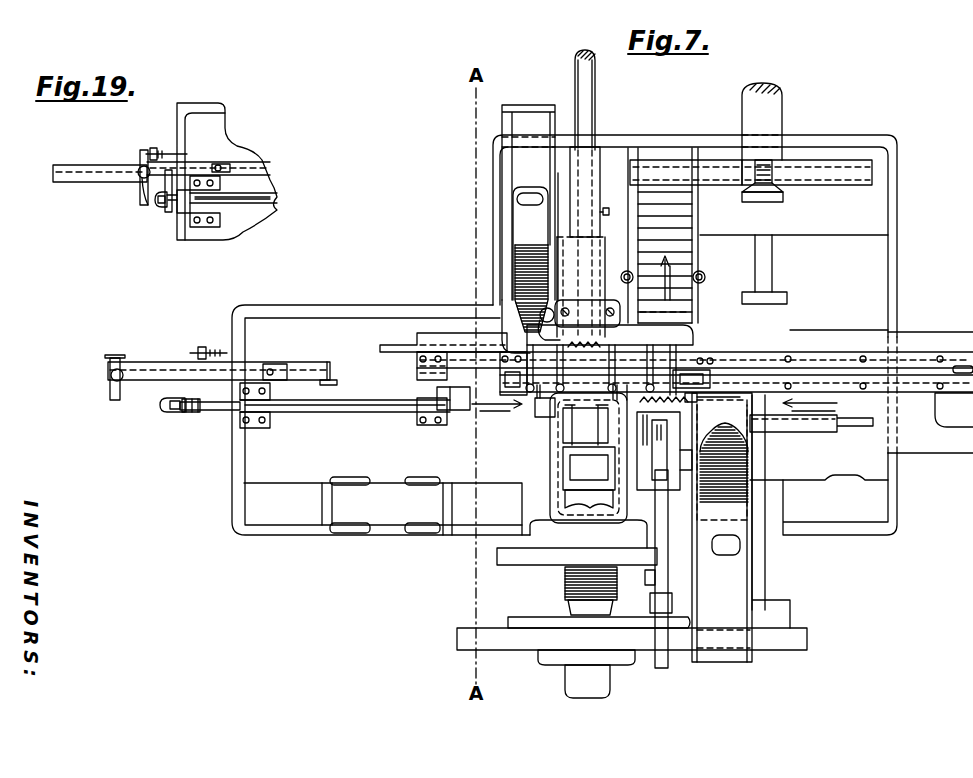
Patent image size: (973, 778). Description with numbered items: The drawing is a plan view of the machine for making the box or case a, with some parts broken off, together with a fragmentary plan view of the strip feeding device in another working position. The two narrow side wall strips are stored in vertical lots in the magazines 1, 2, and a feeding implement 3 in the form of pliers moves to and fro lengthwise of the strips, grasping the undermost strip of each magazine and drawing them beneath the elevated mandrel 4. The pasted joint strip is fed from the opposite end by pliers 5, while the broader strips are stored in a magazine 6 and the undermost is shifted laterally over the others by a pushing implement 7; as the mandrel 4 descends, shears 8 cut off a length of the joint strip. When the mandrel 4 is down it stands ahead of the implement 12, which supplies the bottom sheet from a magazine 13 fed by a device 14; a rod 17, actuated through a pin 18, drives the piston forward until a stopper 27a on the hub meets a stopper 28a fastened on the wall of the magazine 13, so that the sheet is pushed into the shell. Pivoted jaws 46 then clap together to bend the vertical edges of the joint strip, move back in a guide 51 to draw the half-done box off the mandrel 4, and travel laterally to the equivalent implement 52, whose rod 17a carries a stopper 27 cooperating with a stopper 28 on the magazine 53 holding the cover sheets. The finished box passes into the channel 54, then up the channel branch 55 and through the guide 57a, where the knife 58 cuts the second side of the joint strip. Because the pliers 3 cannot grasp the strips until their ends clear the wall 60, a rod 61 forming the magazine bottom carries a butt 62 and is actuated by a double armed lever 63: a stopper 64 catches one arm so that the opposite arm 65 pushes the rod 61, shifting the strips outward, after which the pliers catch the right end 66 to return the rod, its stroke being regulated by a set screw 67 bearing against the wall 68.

In FIG. 19, the magazine 1 is at (263, 210).
In FIG. 7, the magazine 1 is at (302, 407).
In FIG. 19, the magazine 2 is at (260, 195).
In FIG. 7, the magazine 2 is at (337, 407).
In FIG. 7, the feeding implement 3 is at (580, 398).
In FIG. 7, the mandrel 4 is at (583, 427).
In FIG. 7, the pliers 5 is at (612, 398).
In FIG. 7, the magazine 6 is at (708, 372).
In FIG. 7, the pushing implement 7 is at (650, 360).
In FIG. 7, the shears 8 is at (692, 397).
In FIG. 7, the implement 12 is at (612, 308).
In FIG. 7, the magazine 13 is at (500, 243).
In FIG. 7, the device 14 is at (387, 348).
In FIG. 7, the rod 17 is at (587, 131).
In FIG. 7, the rod 17a is at (660, 652).
In FIG. 7, the pin 18 is at (605, 208).
In FIG. 7, the stopper 27 is at (688, 458).
In FIG. 7, the stopper 27a is at (515, 305).
In FIG. 7, the stopper 28 is at (722, 475).
In FIG. 7, the stopper 28a is at (518, 243).
In FIG. 7, the pivoted jaws 46 is at (548, 408).
In FIG. 7, the guide 51 is at (558, 463).
In FIG. 7, the implement 52 is at (643, 470).
In FIG. 7, the magazine 53 is at (752, 467).
In FIG. 7, the channel or guide 54 is at (698, 266).
In FIG. 7, the channel branch 55 is at (665, 163).
In FIG. 7, the channel or guide 57a is at (835, 162).
In FIG. 7, the circular knife 58 is at (775, 172).
In FIG. 7, the wall 60 is at (447, 414).
In FIG. 7, the rod 61 is at (218, 410).
In FIG. 19, the butt 62 is at (157, 207).
In FIG. 7, the butt 62 is at (167, 412).
In FIG. 19, the double armed lever 63 is at (140, 160).
In FIG. 7, the double armed lever 63 is at (117, 368).
In FIG. 19, the stopper 64 is at (153, 148).
In FIG. 7, the stopper 64 is at (197, 350).
In FIG. 19, the arm 65 is at (141, 198).
In FIG. 7, the arm 65 is at (118, 397).
In FIG. 7, the right end 66 is at (477, 407).
In FIG. 19, the set screw 67 is at (168, 213).
In FIG. 7, the set screw 67 is at (196, 413).
In FIG. 19, the wall 68 is at (177, 225).
In FIG. 7, the wall 68 is at (237, 417).
In FIG. 7, the box or case a is at (667, 205).